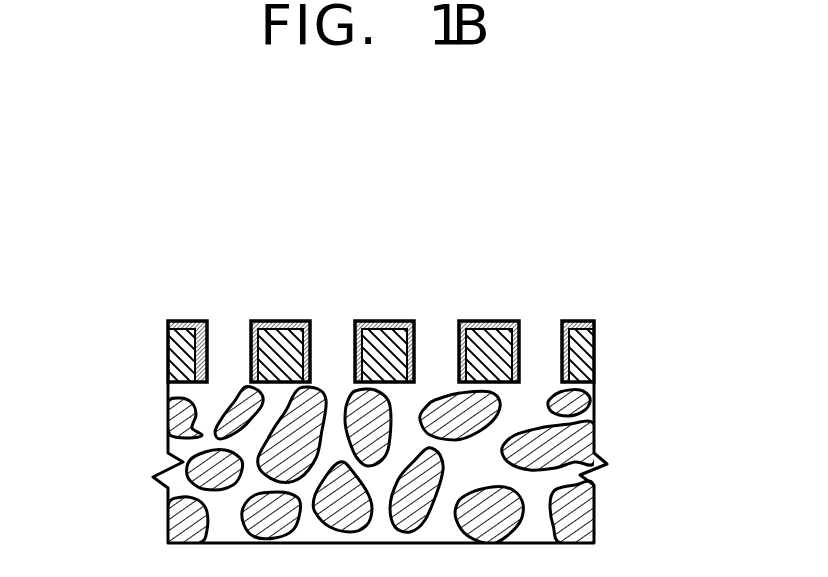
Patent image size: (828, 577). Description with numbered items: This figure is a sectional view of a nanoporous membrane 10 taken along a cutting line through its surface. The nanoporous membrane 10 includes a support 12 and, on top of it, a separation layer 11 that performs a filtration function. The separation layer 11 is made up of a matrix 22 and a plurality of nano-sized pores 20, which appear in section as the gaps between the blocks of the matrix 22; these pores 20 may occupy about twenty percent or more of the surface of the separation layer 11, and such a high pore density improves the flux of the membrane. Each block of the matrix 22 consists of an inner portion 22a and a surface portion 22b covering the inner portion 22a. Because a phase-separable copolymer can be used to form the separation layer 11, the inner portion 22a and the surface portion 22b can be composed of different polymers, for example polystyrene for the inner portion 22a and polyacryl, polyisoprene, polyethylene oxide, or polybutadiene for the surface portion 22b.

The nanoporous membrane 10 is at (609, 209).
The separation layer 11 is at (608, 327).
The support 12 is at (608, 390).
The pores 20 is at (227, 344).
The matrix 22 is at (207, 306).
The inner portion 22a is at (178, 357).
The surface portion 22b is at (172, 323).